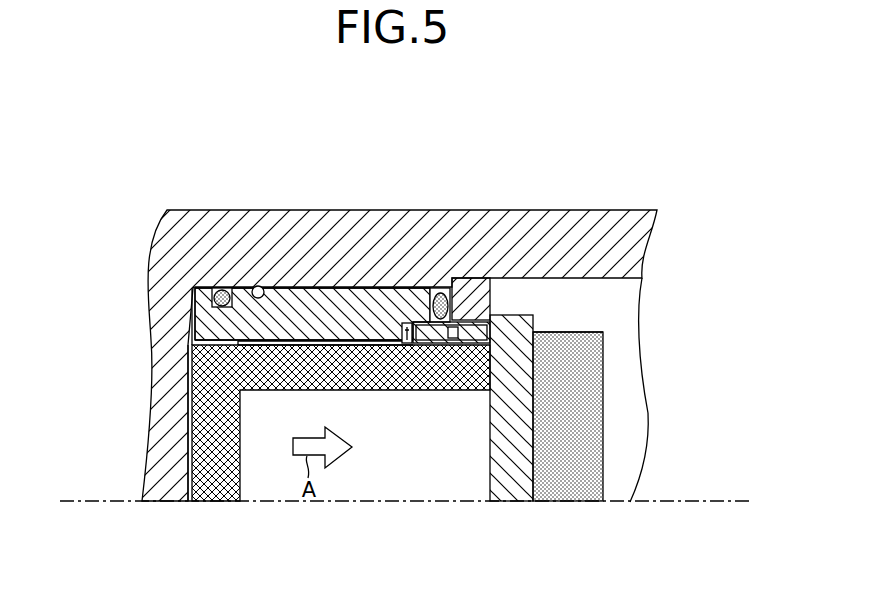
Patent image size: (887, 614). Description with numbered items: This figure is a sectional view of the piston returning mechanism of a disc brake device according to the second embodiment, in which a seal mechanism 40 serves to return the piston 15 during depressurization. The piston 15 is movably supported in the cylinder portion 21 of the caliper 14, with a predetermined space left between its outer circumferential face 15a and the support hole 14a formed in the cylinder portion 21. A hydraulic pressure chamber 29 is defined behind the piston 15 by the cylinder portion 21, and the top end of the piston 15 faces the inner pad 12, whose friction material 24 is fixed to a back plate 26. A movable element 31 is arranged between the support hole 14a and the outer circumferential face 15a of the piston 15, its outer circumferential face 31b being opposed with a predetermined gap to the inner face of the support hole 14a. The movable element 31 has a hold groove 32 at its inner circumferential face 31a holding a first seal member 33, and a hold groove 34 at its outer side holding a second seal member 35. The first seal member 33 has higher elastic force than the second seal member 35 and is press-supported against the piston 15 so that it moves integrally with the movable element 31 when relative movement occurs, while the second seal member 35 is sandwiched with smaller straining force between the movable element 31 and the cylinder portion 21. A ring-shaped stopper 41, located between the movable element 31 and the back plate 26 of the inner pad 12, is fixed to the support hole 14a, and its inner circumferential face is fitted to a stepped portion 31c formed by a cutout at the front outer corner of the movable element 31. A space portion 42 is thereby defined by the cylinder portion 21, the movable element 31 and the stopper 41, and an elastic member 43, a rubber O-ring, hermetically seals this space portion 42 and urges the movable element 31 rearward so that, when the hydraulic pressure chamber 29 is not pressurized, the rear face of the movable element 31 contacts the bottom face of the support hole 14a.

The inner pad 12 is at (595, 332).
The caliper 14 is at (333, 235).
The cylinder portion 21 is at (399, 304).
The support hole 14a is at (258, 287).
The piston 15 is at (216, 493).
The outer circumferential face of piston 15a is at (195, 328).
The friction material 24 is at (572, 492).
The back plate 26 is at (508, 492).
The hydraulic pressure chamber 29 is at (185, 393).
The movable element 31 is at (293, 307).
The inner circumferential face of movable element 31a is at (365, 343).
The outer circumferential face of movable element 31b is at (360, 287).
The stepped portion 31c is at (472, 335).
The hold groove 32 is at (430, 322).
The first seal member 33 is at (405, 346).
The hold groove 34 is at (222, 291).
The second seal member 35 is at (211, 290).
The seal mechanism 40 is at (193, 300).
The stopper 41 is at (473, 300).
The space portion 42 is at (453, 338).
The elastic member 43 is at (447, 306).